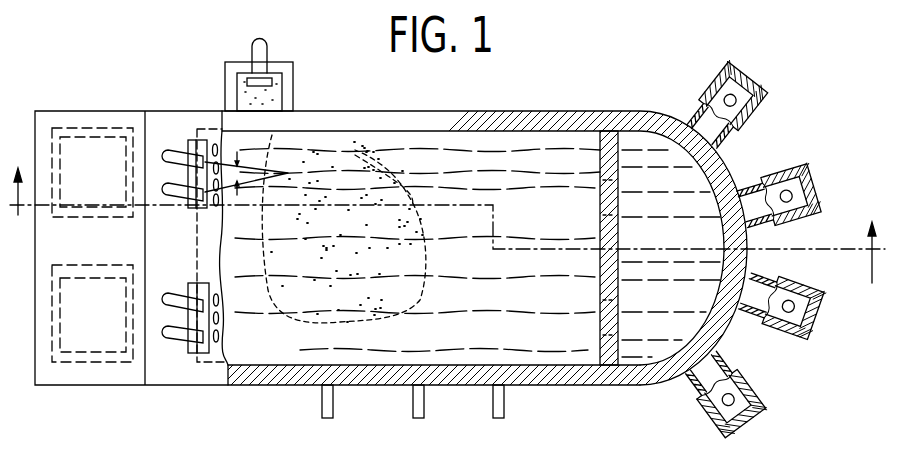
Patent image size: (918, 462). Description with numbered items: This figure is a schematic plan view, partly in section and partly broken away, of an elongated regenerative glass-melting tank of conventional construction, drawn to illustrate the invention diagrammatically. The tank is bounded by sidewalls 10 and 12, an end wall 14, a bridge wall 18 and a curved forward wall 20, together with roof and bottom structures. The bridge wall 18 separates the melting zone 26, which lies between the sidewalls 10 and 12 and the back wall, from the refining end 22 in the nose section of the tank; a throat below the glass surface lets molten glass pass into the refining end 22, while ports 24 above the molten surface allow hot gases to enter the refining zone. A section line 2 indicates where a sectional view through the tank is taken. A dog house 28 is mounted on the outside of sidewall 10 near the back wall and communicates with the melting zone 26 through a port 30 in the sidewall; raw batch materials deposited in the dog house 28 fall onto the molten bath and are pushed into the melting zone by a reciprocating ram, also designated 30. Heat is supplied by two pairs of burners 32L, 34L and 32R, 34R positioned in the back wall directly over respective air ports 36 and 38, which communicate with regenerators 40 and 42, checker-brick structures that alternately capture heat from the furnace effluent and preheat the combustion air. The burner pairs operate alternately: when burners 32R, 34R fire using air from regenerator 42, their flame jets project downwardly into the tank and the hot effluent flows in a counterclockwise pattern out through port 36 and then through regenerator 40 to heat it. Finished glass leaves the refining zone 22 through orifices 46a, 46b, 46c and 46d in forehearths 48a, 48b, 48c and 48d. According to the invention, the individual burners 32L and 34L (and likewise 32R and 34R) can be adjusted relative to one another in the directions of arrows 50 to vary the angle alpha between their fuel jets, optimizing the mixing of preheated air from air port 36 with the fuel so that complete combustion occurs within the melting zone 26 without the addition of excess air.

The section line 2- 2 is at (447, 242).
The sidewall 10 is at (475, 120).
The sidewall 12 is at (267, 380).
The end wall 14 is at (36, 387).
The bridge wall 18 is at (612, 208).
The curved forward wall 20 is at (748, 261).
The refining end 22 is at (637, 349).
The ports 24 is at (618, 190).
The melting zone 26 is at (473, 298).
The dog house 28 is at (293, 80).
The port 30 is at (257, 56).
The burner 32L is at (182, 140).
The burner 32R is at (197, 283).
The burner 34L is at (190, 208).
The burner 34R is at (187, 353).
The air port 36 is at (223, 220).
The air port 38 is at (210, 340).
The regenerator 40 is at (88, 139).
The regenerator 42 is at (99, 353).
The orifice 46a is at (726, 68).
The orifice 46b is at (807, 188).
The orifice 46c is at (813, 322).
The orifice 46d is at (740, 426).
The forehearth 48a is at (706, 94).
The forehearth 48b is at (763, 180).
The forehearth 48c is at (810, 270).
The forehearth 48d is at (751, 384).
The arrows 50 is at (221, 160).